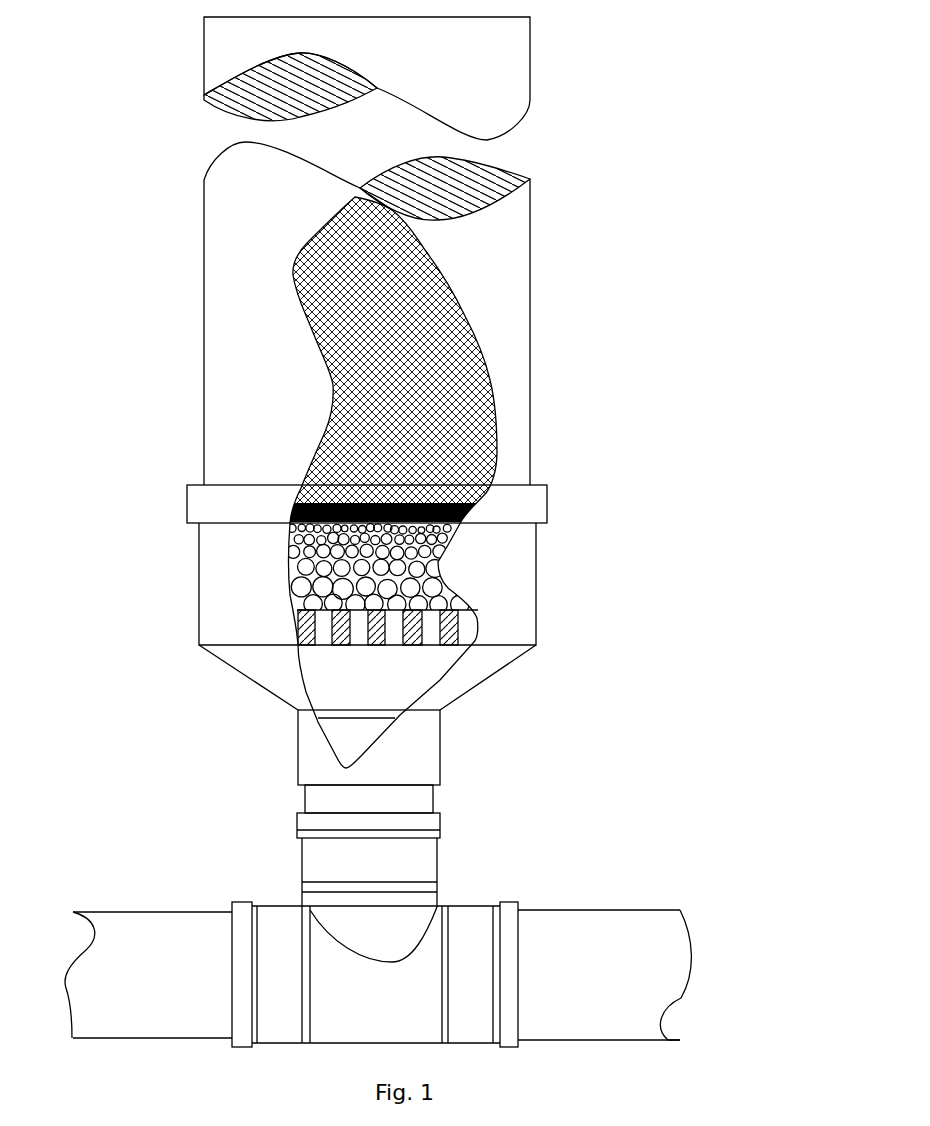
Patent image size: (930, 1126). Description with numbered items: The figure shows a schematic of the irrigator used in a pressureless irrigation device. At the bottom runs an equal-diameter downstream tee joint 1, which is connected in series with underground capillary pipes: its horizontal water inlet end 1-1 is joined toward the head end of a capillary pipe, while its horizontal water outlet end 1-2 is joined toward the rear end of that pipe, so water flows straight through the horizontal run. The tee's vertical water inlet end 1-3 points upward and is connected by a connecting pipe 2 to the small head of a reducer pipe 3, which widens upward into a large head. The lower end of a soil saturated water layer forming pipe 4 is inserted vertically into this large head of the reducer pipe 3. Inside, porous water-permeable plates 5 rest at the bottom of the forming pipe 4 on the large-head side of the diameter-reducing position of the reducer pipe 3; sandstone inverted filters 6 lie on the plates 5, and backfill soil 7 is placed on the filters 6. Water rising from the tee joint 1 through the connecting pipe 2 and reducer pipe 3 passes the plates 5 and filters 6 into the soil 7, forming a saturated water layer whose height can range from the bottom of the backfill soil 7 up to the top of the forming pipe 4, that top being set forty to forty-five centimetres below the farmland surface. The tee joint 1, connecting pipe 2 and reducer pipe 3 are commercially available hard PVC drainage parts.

The equal-diameter downstream tee joint 1 is at (378, 947).
The horizontal water inlet end of the equal-diameter downstream tee joint 1-1 is at (188, 956).
The horizontal water outlet end of the equal-diameter downstream tee joint 1-2 is at (556, 960).
The vertical water inlet end of the equal-diameter downstream tee joint 1-3 is at (446, 785).
The connecting pipe 2 is at (324, 808).
The reducer pipe 3 is at (360, 612).
The soil saturated water layer forming pipe 4 is at (303, 251).
The porous water-permeable plates 5 is at (475, 571).
The sandstone inverted filters 6 is at (471, 519).
The backfill soil 7 is at (469, 479).